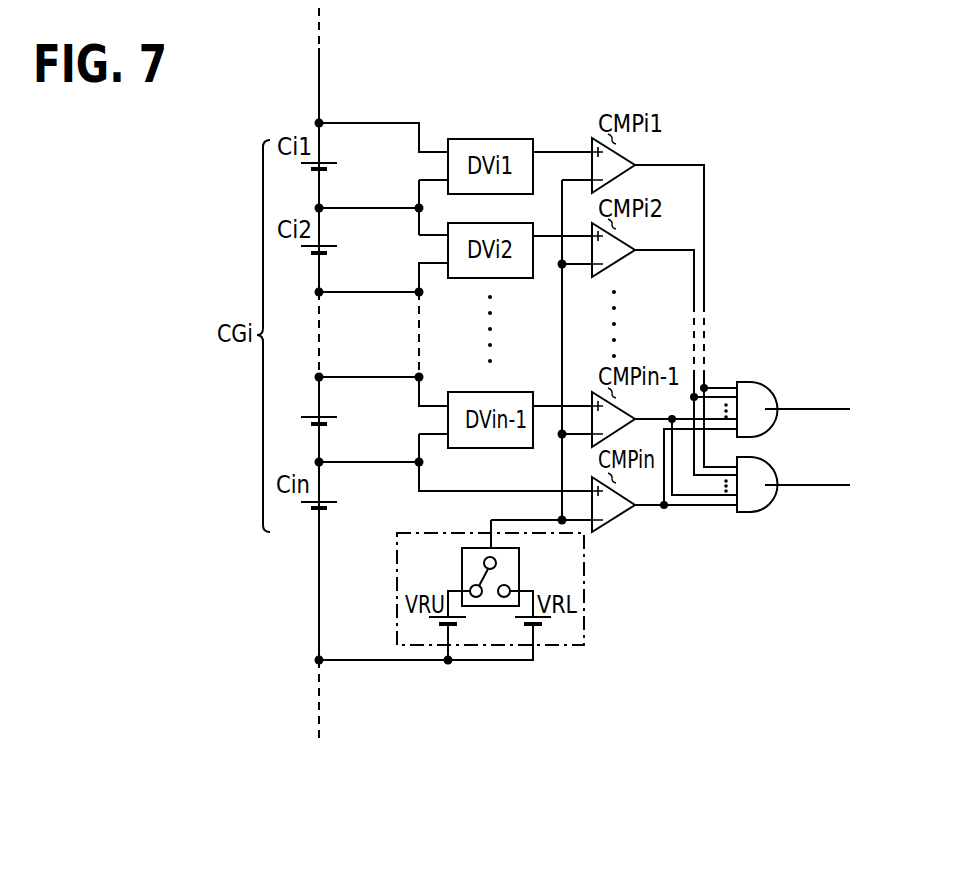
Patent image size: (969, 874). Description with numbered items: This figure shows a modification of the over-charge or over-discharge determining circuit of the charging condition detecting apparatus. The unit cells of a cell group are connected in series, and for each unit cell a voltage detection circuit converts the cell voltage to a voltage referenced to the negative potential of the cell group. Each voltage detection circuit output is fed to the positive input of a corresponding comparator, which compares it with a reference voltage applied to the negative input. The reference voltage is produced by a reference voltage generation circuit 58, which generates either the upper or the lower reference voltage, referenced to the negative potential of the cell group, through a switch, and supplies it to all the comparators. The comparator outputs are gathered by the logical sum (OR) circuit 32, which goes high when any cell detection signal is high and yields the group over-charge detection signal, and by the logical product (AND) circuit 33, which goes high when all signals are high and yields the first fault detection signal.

The logical sum (OR) circuit 32 is at (765, 389).
The logical product (AND) circuit 33 is at (765, 504).
The reference voltage generation circuit 58 is at (584, 578).